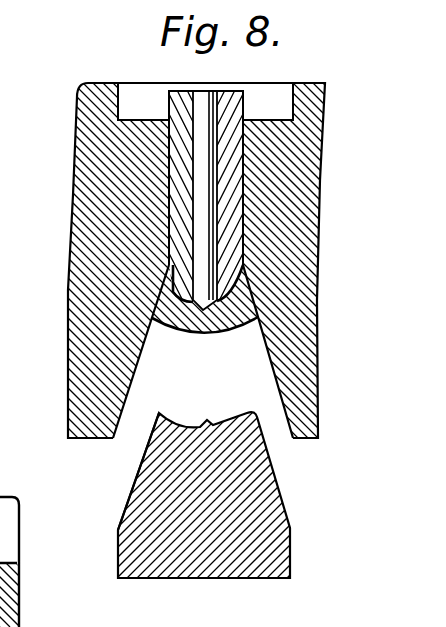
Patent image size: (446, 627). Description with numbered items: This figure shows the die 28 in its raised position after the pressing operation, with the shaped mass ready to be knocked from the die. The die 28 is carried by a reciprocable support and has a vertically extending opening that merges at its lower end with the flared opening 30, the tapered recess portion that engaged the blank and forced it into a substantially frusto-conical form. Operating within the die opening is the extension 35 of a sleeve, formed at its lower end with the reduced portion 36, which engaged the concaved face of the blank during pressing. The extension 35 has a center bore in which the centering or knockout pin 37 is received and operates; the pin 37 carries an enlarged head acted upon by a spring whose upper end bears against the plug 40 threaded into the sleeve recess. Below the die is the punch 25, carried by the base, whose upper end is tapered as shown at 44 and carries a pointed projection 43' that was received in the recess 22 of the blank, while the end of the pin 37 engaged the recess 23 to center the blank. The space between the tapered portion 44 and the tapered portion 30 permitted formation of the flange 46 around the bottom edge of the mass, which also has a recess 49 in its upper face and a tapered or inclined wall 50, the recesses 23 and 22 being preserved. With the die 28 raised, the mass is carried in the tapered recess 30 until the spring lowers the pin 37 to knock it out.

The die 28 is at (82, 180).
The plug 40 is at (137, 85).
The extension 35 is at (177, 133).
The centering or knockout pin 37 is at (213, 120).
The reduced portion 36 is at (183, 287).
The tapered or inclined wall 50 is at (153, 319).
The recess 22 is at (201, 331).
The recess 49 is at (248, 292).
The flange 46 is at (193, 330).
The recess 23 is at (193, 330).
The pointed projection 43' is at (182, 397).
The flared opening 30 is at (243, 384).
The punch 25 is at (118, 538).
The tapered upper end of the punch 44 is at (143, 470).